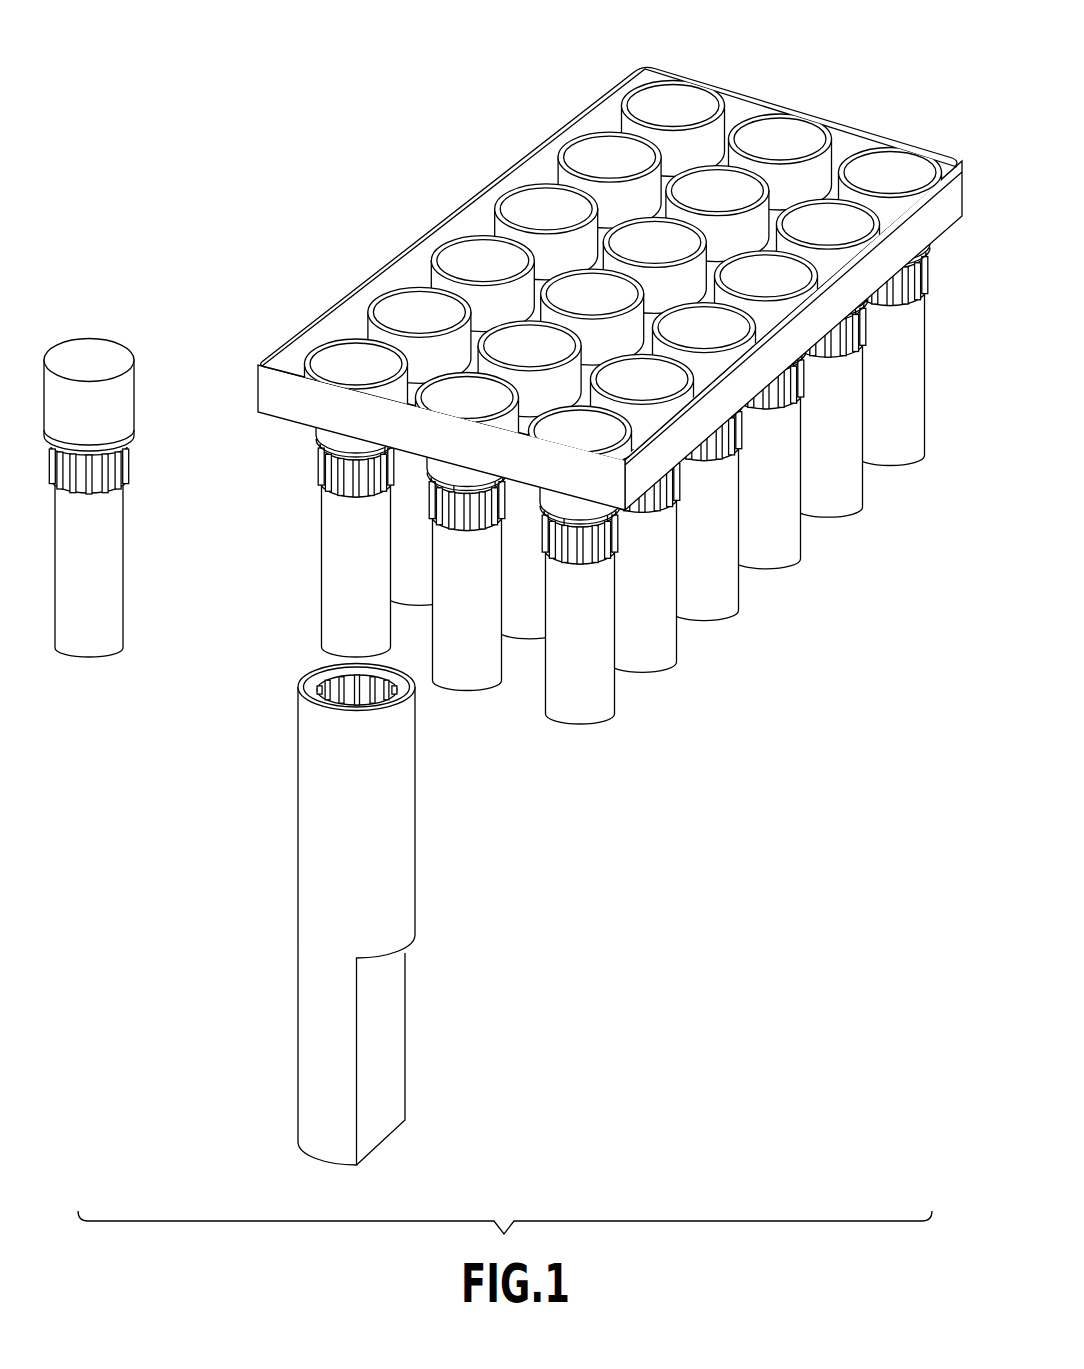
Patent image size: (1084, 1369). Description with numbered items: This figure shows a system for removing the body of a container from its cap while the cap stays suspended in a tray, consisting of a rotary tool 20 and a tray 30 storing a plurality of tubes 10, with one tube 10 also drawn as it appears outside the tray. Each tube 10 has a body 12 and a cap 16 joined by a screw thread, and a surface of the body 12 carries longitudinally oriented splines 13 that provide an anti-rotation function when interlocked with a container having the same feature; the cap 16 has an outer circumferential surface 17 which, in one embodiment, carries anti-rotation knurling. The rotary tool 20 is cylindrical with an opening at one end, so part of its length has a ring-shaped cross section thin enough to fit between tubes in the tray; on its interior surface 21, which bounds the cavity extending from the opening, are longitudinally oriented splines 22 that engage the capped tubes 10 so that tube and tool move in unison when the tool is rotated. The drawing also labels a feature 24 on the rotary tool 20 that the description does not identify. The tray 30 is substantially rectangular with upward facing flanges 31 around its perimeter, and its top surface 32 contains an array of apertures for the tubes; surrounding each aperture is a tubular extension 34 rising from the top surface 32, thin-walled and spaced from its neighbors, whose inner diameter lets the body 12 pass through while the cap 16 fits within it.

The tube 10 is at (172, 464).
The body 12 is at (108, 535).
The splines 13 is at (120, 467).
The cap 16 is at (80, 352).
The outer circumferential surface 17 is at (120, 416).
The rotary tool 20 is at (402, 909).
The interior surface 21 is at (345, 700).
The splines 22 is at (342, 678).
The key strip 24 is at (390, 1060).
The tray 30 is at (579, 377).
The upward facing flanges 31 is at (300, 397).
The top surface 32 is at (780, 205).
The tubular extension 34 is at (707, 137).